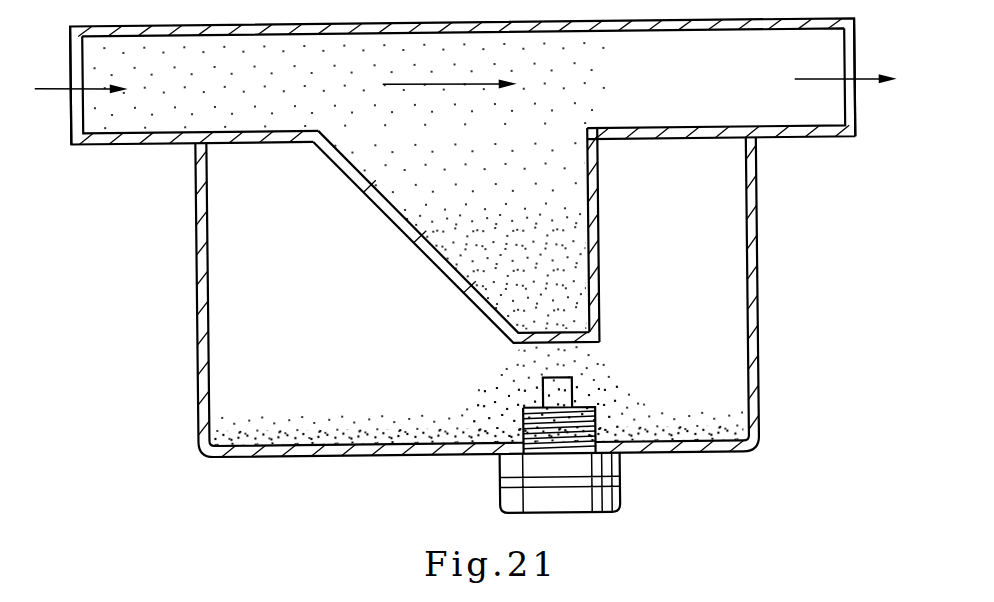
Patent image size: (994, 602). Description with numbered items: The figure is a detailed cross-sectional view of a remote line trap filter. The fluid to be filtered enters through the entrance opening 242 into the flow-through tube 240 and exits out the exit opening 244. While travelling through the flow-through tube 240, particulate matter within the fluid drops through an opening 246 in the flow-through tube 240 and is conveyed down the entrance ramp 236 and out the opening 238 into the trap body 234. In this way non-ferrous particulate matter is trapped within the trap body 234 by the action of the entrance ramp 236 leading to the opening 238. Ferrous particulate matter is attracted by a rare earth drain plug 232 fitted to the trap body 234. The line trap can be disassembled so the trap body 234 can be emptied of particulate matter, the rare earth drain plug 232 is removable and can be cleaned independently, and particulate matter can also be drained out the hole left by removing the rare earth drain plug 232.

The flow-through tube 240 is at (696, 68).
The entrance opening 242 is at (62, 128).
The exit opening 244 is at (866, 126).
The trap body 234 is at (739, 198).
The entrance ramp 236 is at (346, 168).
The opening 238 is at (612, 351).
The opening 246 is at (552, 126).
The rare earth drain plug 232 is at (484, 494).